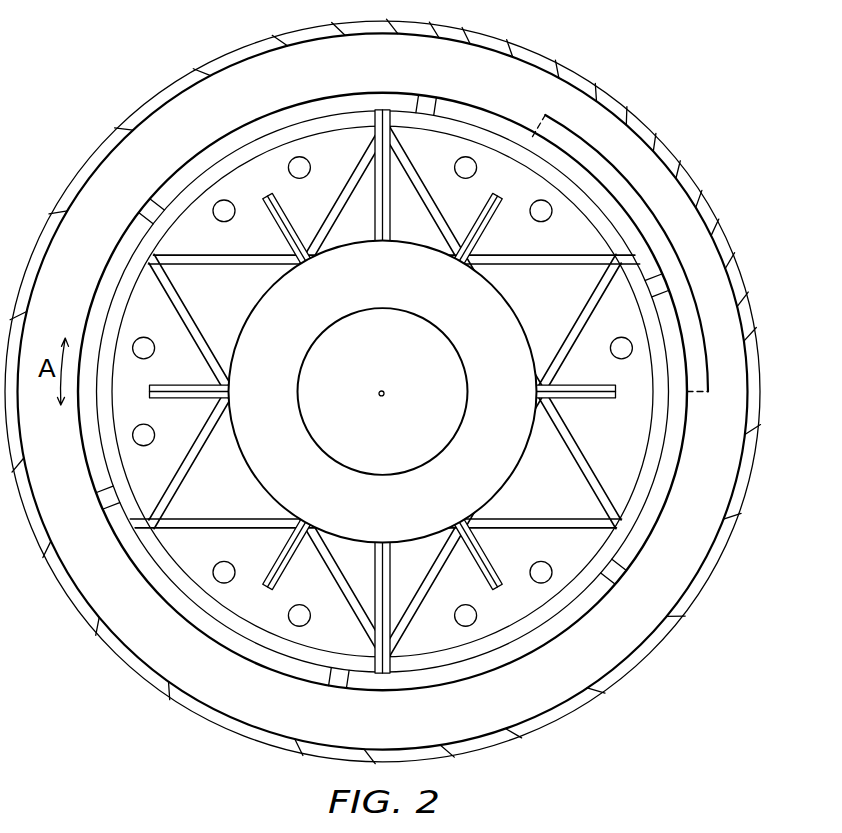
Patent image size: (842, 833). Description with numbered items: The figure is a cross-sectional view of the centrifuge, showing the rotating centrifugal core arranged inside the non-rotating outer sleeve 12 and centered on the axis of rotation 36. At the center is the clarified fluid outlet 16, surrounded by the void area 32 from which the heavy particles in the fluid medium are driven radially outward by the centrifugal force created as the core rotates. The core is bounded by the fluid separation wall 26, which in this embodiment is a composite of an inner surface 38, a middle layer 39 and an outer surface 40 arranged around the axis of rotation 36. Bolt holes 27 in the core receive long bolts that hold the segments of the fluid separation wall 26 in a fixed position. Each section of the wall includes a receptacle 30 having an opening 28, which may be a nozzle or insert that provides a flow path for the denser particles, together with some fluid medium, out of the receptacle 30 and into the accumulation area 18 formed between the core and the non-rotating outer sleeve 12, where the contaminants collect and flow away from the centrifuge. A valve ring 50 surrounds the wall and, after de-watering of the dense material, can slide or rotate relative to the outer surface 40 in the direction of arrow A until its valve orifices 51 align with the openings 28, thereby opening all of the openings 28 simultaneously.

The non-rotating outer sleeve 12 is at (350, 126).
The clarified fluid outlet 16 is at (383, 391).
The accumulation area 18 is at (286, 198).
The fluid separation wall 26 is at (385, 391).
The bolt holes 27 is at (383, 384).
The opening 28 is at (356, 496).
The receptacle 30 is at (639, 253).
The void area 32 is at (383, 390).
The axis of rotation 36 is at (352, 413).
The inner surface 38 is at (384, 392).
The middle layer 39 is at (352, 391).
The outer surface 40 is at (90, 266).
The valve ring 50 is at (304, 95).
The valve orifices 51 is at (415, 388).